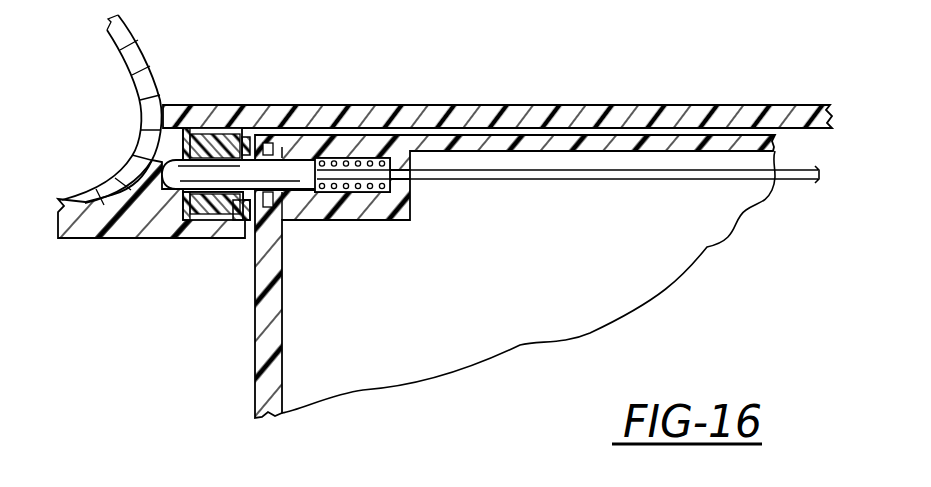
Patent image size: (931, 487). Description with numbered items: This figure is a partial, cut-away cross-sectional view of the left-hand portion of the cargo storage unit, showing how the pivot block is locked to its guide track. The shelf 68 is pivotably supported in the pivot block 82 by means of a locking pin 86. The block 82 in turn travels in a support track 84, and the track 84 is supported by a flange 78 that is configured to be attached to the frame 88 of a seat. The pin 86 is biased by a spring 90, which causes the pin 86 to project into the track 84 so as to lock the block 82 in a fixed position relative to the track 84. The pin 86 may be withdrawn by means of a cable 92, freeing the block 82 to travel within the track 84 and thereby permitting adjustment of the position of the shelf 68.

The shelf 68 is at (430, 366).
The flange 78 is at (131, 230).
The pivot block 82 is at (205, 140).
The support track 84 is at (246, 156).
The locking pin 86 is at (295, 172).
The frame 88 is at (112, 163).
The spring 90 is at (345, 188).
The cable 92 is at (700, 178).